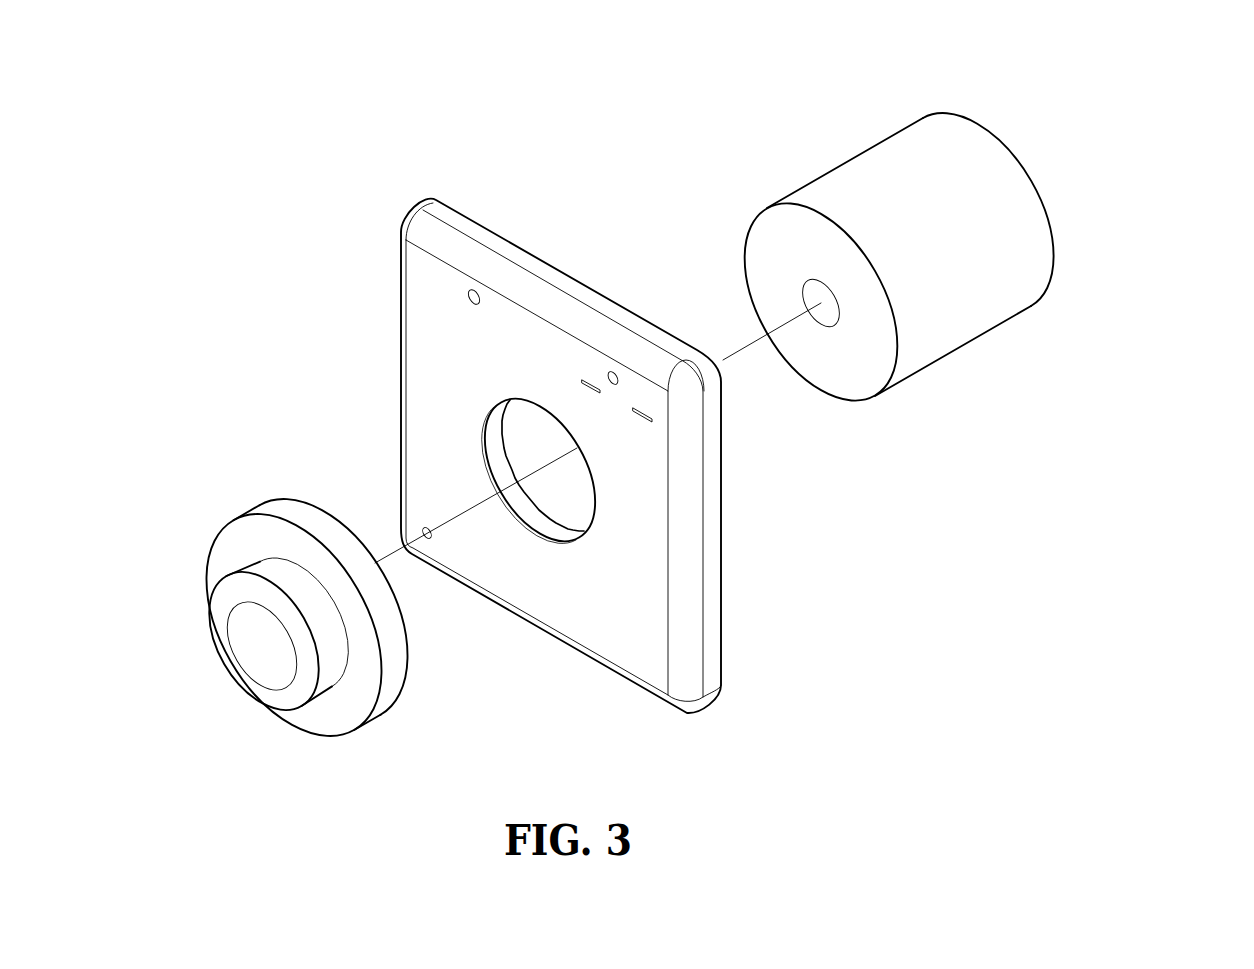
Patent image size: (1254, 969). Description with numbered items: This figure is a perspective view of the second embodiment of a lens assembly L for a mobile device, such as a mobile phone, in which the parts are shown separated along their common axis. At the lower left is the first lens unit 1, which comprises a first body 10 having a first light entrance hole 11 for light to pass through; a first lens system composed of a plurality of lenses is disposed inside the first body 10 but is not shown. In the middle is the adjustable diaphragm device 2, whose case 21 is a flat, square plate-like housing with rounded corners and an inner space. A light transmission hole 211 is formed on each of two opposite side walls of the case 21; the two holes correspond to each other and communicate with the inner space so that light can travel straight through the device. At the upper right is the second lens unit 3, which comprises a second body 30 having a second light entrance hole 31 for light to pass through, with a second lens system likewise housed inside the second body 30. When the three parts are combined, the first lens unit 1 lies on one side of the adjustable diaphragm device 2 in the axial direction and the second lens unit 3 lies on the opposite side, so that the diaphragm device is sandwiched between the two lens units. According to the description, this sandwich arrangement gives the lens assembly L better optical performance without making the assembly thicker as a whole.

The first lens unit 1 is at (258, 601).
The first body 10 is at (262, 541).
The first light entrance hole 11 is at (258, 644).
The adjustable diaphragm device 2 is at (501, 449).
The case 21 is at (415, 333).
The light transmission hole 211 is at (532, 507).
The second lens unit 3 is at (930, 274).
The second body 30 is at (893, 163).
The second light entrance hole 31 is at (822, 312).
The lens assembly L is at (1203, 118).